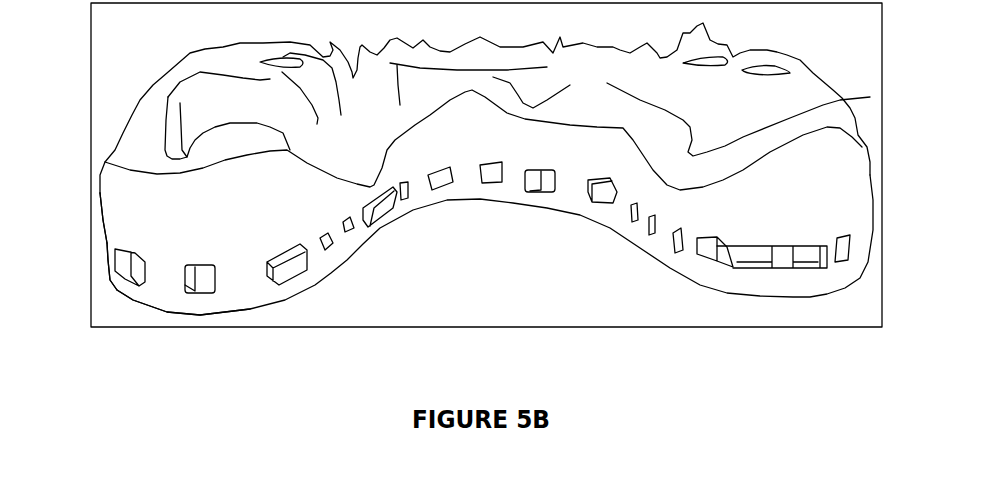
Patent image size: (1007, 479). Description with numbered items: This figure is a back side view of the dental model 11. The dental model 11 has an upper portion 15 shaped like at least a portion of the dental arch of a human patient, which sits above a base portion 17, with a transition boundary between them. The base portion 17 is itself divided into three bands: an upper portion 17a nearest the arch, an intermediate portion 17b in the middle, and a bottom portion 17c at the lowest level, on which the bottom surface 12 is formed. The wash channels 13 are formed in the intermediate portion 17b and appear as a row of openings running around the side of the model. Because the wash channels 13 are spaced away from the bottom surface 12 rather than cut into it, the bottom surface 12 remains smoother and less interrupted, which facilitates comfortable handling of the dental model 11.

The dental model 11 is at (150, 117).
The bottom surface 12 is at (747, 293).
The wash channels 13 is at (694, 258).
The upper portion 15 is at (693, 132).
The base portion 17 is at (818, 180).
The upper portion of base portion 17a is at (162, 233).
The intermediate portion 17b is at (168, 275).
The bottom portion 17c is at (220, 307).